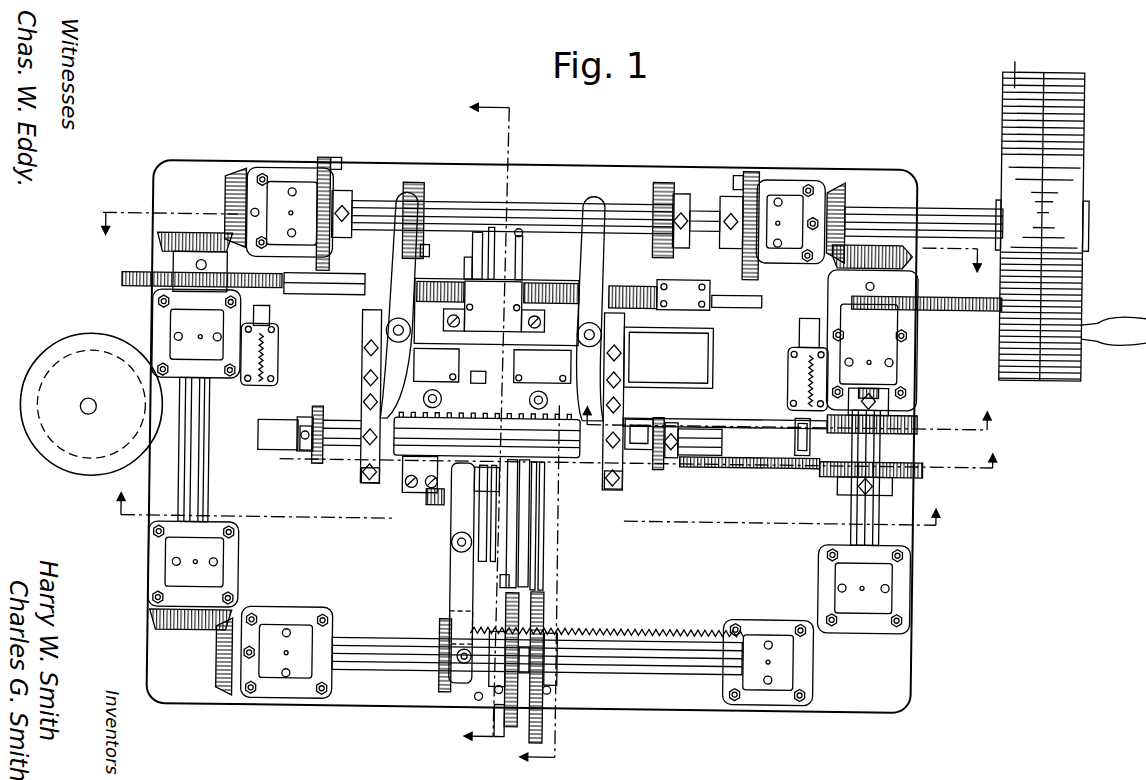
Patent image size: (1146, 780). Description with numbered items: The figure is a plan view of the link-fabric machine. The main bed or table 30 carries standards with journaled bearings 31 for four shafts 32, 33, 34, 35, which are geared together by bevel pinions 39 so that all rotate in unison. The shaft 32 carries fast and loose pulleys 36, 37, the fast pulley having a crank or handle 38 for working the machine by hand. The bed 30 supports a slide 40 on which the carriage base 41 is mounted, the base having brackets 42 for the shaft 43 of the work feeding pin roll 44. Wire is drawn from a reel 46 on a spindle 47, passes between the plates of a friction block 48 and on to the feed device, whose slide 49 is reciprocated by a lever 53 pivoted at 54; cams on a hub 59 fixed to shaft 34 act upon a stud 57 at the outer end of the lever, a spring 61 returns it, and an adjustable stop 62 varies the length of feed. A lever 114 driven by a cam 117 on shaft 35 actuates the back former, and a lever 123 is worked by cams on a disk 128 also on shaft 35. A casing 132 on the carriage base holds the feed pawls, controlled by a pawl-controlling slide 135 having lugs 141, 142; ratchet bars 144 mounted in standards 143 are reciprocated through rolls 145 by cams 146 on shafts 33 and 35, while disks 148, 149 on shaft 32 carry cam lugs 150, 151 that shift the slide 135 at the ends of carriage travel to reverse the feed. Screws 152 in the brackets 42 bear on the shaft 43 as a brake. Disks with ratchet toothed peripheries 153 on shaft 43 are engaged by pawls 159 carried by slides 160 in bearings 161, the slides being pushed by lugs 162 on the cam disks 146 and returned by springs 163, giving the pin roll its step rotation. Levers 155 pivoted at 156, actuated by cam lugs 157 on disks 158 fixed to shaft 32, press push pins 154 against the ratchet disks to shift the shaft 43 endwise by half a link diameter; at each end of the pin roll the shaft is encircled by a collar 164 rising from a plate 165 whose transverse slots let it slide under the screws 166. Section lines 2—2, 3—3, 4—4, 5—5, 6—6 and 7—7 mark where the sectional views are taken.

The section line 2— 2 is at (536, 500).
The section line 3— 3 is at (539, 255).
The section line 4— 4 is at (476, 420).
The section line 5— 5 is at (531, 584).
The section line 6— 6 is at (789, 407).
The section line 7— 7 is at (644, 450).
The main bed or table 30 is at (585, 168).
The journaled bearings 31 is at (536, 416).
The shaft 32 is at (626, 203).
The shaft 33 is at (209, 480).
The shaft 34 is at (630, 664).
The shaft 35 is at (880, 534).
The fast pulley 36 is at (1074, 78).
The loose pulley 37 is at (1016, 63).
The crank or handle 38 is at (1118, 334).
The bevel pinions 39 is at (222, 197).
The slide 40 is at (712, 364).
The carriage base 41 is at (375, 322).
The brackets 42 is at (365, 410).
The shaft 43 is at (718, 453).
The work feeding pin roll 44 is at (560, 457).
The reel 46 is at (38, 373).
The spindle 47 is at (86, 414).
The friction block 48 is at (404, 480).
The slide 49 is at (482, 466).
The lever 53 is at (448, 520).
The pivot 54 is at (455, 548).
The stud 57 is at (442, 676).
The hub 59 is at (455, 632).
The spring 61 is at (595, 634).
The adjustable stop 62 is at (427, 500).
The lever 114 is at (752, 417).
The cam 117 is at (918, 428).
The lever 123 is at (785, 466).
The disk 128 is at (923, 476).
The box or casing 132 is at (518, 298).
The pawl-controlling slide 135 is at (490, 228).
The lug 141 is at (522, 243).
The lug 142 is at (470, 244).
The standards 143 is at (400, 285).
The ratchet bar 144 is at (626, 290).
The roll 145 is at (320, 296).
The cam 146 is at (120, 283).
The disk 148 is at (412, 184).
The disk 149 is at (665, 182).
The cam lug 150 is at (424, 246).
The cam lug 151 is at (682, 205).
The screws 152 is at (360, 450).
The ratchet toothed peripheries 153 is at (325, 458).
The push pin 154 is at (330, 425).
The levers 155 is at (398, 365).
The pivot 156 is at (409, 335).
The cam lugs 157 is at (338, 162).
The disks 158 is at (322, 160).
The pawls 159 is at (258, 437).
The slides 160 is at (268, 315).
The bearings 161 is at (255, 375).
The lugs 162 is at (250, 318).
The springs 163 is at (262, 362).
The collar 164 is at (368, 485).
The plate 165 is at (478, 380).
The screws 166 is at (432, 392).